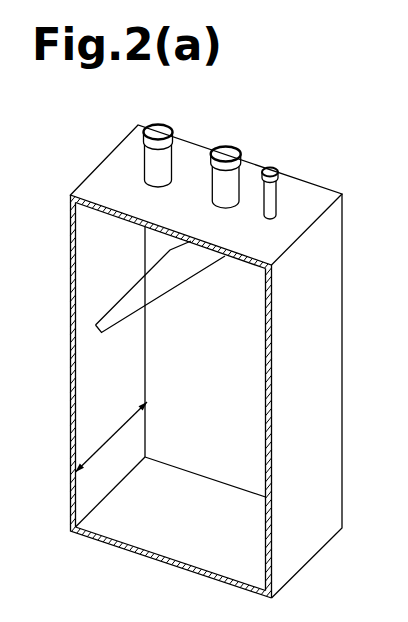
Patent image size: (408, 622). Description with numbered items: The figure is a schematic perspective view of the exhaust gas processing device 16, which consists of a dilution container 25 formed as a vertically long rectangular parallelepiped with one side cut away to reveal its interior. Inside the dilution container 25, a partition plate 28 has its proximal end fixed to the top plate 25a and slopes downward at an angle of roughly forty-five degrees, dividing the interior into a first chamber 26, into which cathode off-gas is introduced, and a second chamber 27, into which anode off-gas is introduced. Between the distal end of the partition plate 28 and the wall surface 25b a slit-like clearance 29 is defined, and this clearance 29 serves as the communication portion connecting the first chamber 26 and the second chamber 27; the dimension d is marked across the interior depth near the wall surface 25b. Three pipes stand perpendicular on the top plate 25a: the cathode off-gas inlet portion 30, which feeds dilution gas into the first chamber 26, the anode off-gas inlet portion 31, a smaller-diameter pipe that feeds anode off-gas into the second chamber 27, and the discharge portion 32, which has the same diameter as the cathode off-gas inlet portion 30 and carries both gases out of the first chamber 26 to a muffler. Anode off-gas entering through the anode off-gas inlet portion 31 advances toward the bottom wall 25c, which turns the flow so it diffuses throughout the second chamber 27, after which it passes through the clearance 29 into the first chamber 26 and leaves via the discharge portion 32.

The exhaust gas processing device 16 is at (363, 151).
The dilution container 25 is at (344, 247).
The top plate 25a is at (110, 197).
The wall surface 25b is at (88, 410).
The bottom wall 25c is at (138, 535).
The first chamber 26 is at (95, 258).
The second chamber 27 is at (257, 412).
The partition plate 28 is at (167, 288).
The clearance 29 is at (90, 337).
The cathode off-gas inlet portion 30 is at (218, 187).
The anode off-gas inlet portion 31 is at (273, 198).
The discharge portion 32 is at (152, 163).
The depth d is at (107, 432).